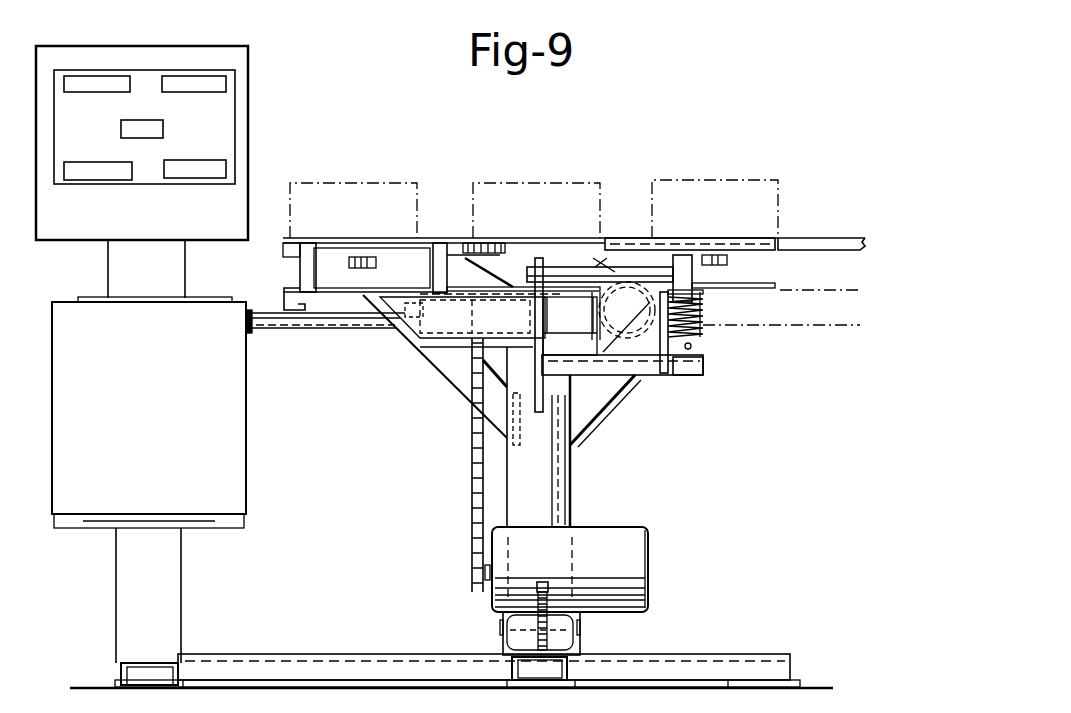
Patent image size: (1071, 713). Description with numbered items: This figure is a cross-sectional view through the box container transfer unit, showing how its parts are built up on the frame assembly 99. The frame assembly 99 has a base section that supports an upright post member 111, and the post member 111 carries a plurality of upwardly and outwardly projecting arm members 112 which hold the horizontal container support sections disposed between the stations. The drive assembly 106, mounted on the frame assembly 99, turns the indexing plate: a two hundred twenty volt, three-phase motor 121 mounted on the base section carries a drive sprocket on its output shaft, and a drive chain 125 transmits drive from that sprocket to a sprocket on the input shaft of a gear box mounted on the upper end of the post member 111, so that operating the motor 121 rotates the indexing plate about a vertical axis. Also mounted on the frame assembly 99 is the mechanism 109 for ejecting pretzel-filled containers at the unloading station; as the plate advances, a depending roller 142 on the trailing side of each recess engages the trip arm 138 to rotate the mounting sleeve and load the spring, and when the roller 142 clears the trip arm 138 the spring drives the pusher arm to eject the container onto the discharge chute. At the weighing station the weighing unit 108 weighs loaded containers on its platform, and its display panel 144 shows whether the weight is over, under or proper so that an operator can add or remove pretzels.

The frame assembly 99 is at (372, 654).
The drive assembly 106 is at (653, 550).
The weighing unit 108 is at (178, 143).
The mechanism 109 is at (703, 348).
The post member 111 is at (553, 465).
The arm members 112 is at (447, 373).
The motor 121 is at (618, 526).
The drive chain 125 is at (473, 462).
The trip arm 138 is at (451, 696).
The roller 142 is at (853, 271).
The display panel 144 is at (226, 105).